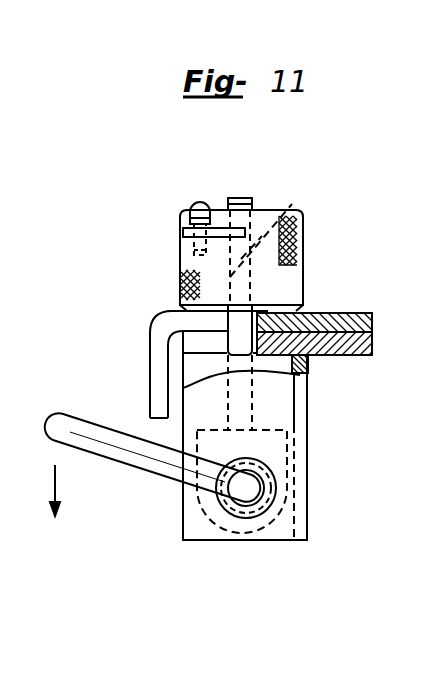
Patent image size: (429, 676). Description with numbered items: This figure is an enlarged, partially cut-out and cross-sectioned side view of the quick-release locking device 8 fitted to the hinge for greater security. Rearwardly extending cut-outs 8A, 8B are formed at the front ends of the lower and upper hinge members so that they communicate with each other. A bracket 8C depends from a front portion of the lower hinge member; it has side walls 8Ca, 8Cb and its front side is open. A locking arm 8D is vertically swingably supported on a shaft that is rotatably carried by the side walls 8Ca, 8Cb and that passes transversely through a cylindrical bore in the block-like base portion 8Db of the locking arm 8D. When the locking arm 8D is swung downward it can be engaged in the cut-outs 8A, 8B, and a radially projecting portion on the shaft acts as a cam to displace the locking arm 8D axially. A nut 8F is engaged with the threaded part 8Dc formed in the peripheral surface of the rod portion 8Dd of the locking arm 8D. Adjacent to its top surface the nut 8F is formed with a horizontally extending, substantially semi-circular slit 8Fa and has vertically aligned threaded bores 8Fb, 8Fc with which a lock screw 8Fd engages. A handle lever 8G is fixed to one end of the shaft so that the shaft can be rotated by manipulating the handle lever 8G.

The locking device 8 is at (166, 296).
The cut-out 8A is at (205, 340).
The cut-out 8B is at (195, 321).
The bracket 8C is at (309, 447).
The side wall 8Ca is at (202, 367).
The side wall 8Cb is at (262, 400).
The locking arm 8D is at (244, 195).
The base portion 8Db is at (275, 468).
The threaded part 8Dc is at (300, 236).
The rod portion 8Dd is at (284, 230).
The nut 8F is at (305, 291).
The slit 8Fa is at (183, 232).
The threaded bore 8Fb is at (188, 219).
The threaded bore 8Fc is at (205, 252).
The lock screw 8Fd is at (193, 203).
The handle lever 8G is at (102, 442).